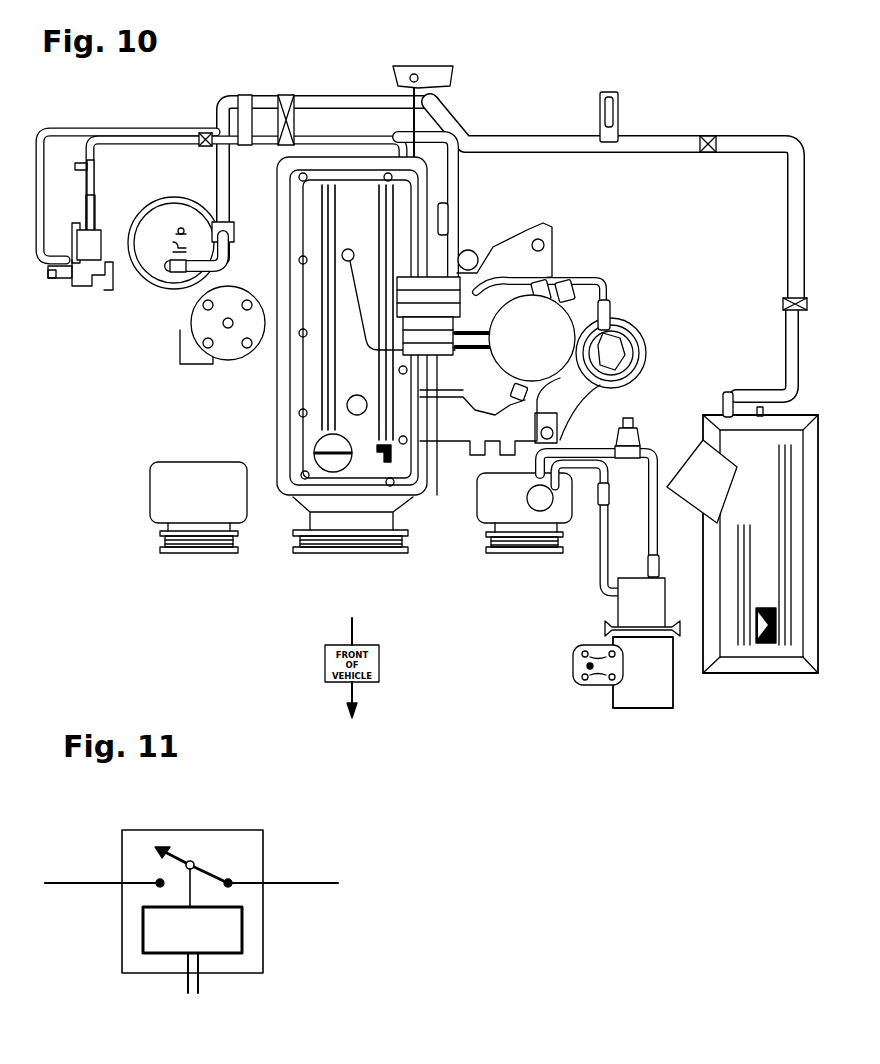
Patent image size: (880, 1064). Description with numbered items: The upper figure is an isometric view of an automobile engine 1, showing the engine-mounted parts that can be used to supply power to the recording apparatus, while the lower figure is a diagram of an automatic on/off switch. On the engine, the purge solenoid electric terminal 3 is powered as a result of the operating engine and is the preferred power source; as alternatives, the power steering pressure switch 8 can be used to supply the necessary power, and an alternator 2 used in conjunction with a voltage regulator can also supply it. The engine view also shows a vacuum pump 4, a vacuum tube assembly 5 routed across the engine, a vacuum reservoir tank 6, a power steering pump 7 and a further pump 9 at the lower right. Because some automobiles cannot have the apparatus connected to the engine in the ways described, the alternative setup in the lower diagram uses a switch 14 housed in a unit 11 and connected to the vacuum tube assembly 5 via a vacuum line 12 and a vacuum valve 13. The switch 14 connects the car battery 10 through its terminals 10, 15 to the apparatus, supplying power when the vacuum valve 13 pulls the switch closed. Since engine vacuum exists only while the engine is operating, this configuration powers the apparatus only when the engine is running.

In FIG. 10, the engine 1 is at (274, 406).
In FIG. 10, the alternator 2 is at (152, 486).
In FIG. 10, the purge solenoid electric terminal 3 is at (60, 284).
In FIG. 10, the vacuum pump 4 is at (146, 288).
In FIG. 10, the vacuum tube assembly 5 is at (458, 113).
In FIG. 10, the vacuum reservoir tank 6 is at (760, 674).
In FIG. 10, the power steering pump 7 is at (478, 518).
In FIG. 10, the power steering pressure switch 8 is at (638, 419).
In FIG. 10, the auxiliary vacuum pump 9 is at (643, 709).
In FIG. 11, the car battery 10 is at (338, 883).
In FIG. 11, the relay 11 is at (264, 945).
In FIG. 11, the vacuum line 12 is at (200, 986).
In FIG. 11, the vacuum valve 13 is at (143, 932).
In FIG. 11, the switch 14 is at (181, 860).
In FIG. 11, the terminal 15 is at (47, 883).